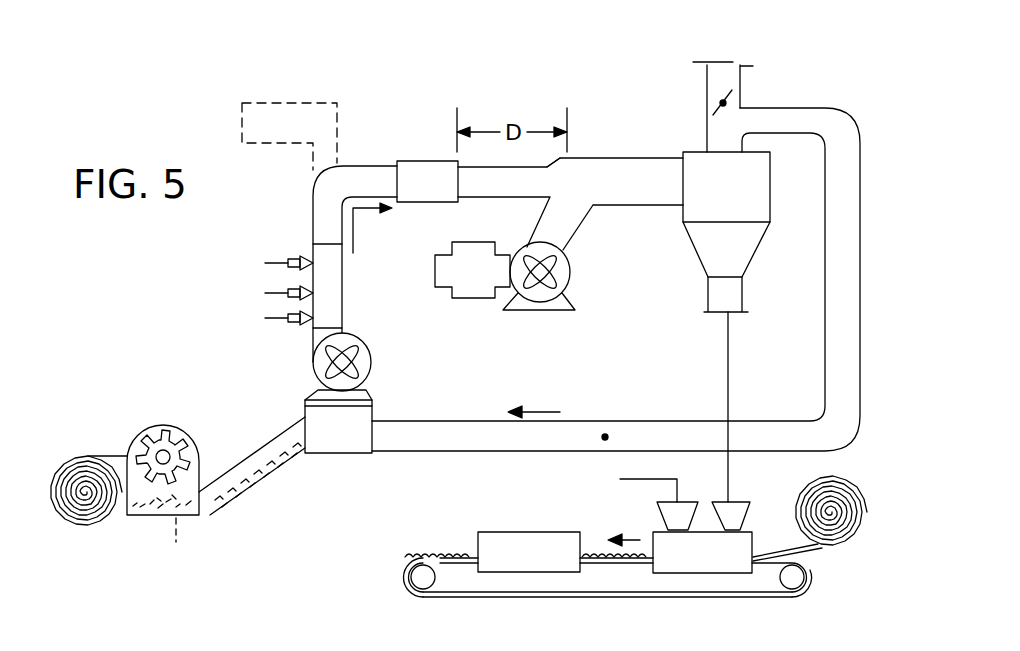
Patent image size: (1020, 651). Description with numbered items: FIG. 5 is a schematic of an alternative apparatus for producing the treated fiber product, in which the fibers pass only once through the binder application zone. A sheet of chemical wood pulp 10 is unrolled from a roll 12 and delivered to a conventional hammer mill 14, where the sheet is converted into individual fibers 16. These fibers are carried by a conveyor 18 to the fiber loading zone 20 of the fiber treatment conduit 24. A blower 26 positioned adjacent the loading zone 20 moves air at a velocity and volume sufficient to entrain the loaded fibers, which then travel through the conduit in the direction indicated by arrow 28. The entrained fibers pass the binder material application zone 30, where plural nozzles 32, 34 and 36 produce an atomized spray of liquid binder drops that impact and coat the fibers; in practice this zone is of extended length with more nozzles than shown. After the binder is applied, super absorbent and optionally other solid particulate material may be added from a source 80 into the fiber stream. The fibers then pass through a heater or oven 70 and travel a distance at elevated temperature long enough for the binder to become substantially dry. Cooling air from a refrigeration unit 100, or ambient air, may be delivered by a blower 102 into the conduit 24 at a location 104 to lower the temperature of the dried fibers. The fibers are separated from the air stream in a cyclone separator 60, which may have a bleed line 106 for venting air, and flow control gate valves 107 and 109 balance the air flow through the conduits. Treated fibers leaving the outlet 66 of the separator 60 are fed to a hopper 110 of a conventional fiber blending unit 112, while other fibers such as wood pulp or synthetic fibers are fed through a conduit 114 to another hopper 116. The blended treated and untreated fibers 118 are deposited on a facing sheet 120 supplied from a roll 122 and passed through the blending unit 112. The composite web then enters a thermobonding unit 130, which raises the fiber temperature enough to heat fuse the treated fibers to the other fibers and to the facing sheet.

The sheet of chemical wood pulp 10 is at (108, 456).
The roll 12 is at (73, 516).
The hammer mill 14 is at (168, 425).
The individual fibers 16 is at (172, 544).
The conveyor 18 is at (262, 482).
The fiber loading zone 20 is at (362, 418).
The fiber treatment conduit 24 is at (604, 152).
The blower 26 is at (365, 348).
The arrow 28 is at (356, 235).
The binder material application zone 30 is at (343, 275).
The nozzle 32 is at (300, 320).
The nozzle 34 is at (300, 292).
The nozzle 36 is at (313, 262).
The cyclone separator 60 is at (699, 162).
The outlet 66 is at (728, 342).
The heater 70 is at (418, 161).
The source 80 is at (240, 123).
The refrigeration unit 100 is at (465, 300).
The blower 102 is at (567, 258).
The location 104 is at (575, 173).
The bleed line 106 is at (742, 75).
The flow control gate valve 107 is at (714, 100).
The flow control gate valve 109 is at (612, 450).
The hopper 110 is at (752, 510).
The fiber blending unit 112 is at (695, 574).
The conduit 114 is at (655, 479).
The hopper 116 is at (660, 515).
The blended treated and untreated fibers 118 is at (600, 548).
The facing sheet 120 is at (818, 552).
The roll 122 is at (818, 478).
The thermobonding unit 130 is at (500, 532).